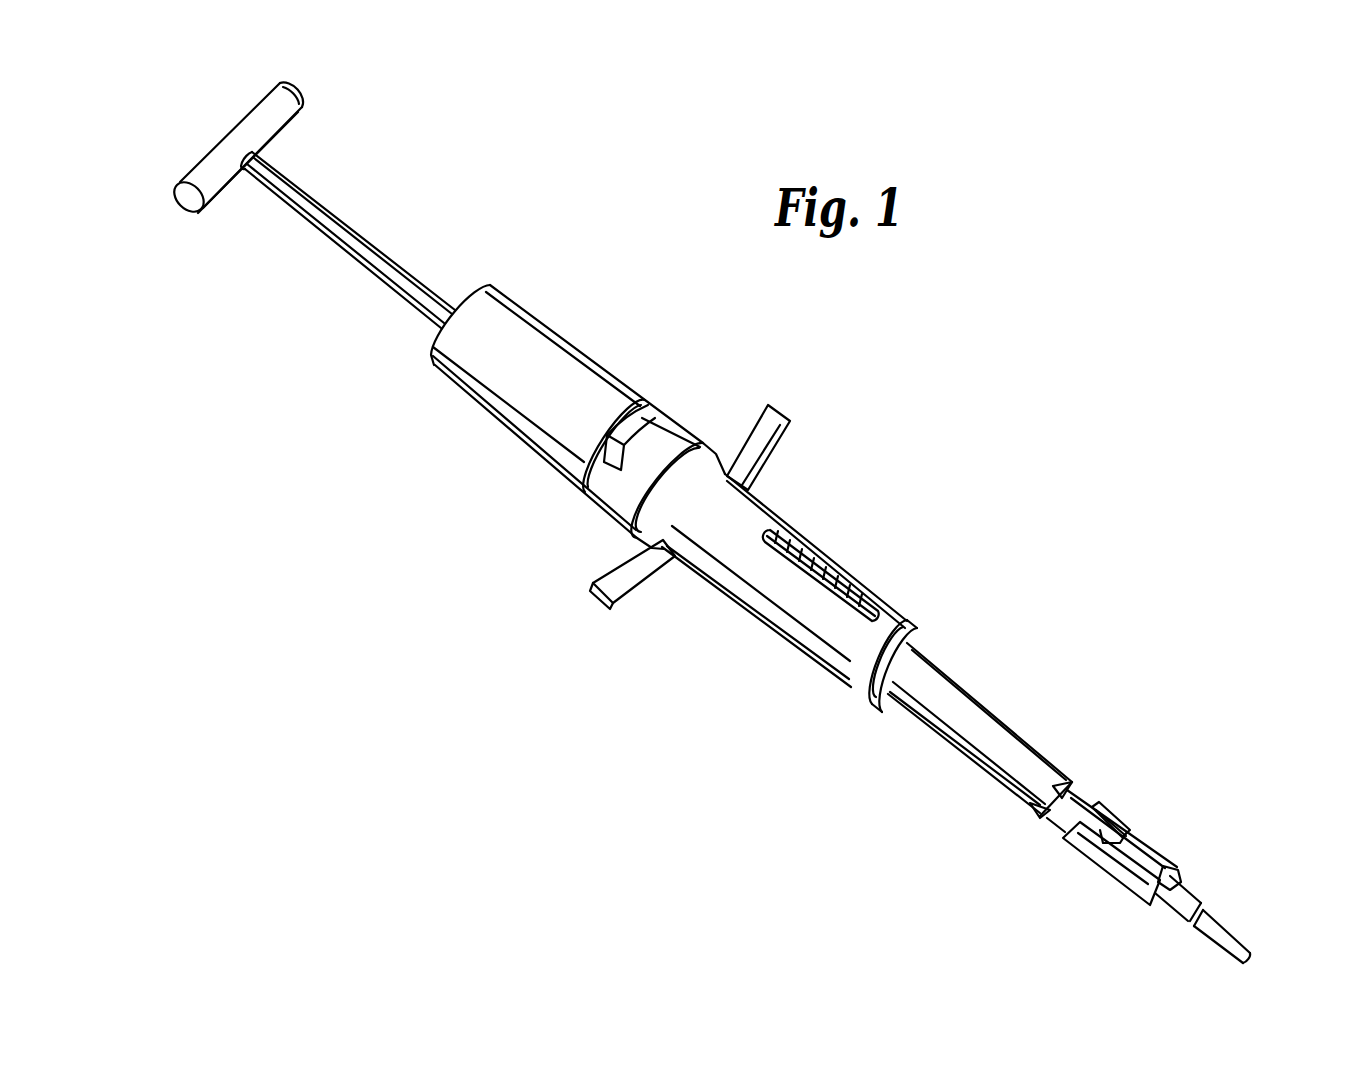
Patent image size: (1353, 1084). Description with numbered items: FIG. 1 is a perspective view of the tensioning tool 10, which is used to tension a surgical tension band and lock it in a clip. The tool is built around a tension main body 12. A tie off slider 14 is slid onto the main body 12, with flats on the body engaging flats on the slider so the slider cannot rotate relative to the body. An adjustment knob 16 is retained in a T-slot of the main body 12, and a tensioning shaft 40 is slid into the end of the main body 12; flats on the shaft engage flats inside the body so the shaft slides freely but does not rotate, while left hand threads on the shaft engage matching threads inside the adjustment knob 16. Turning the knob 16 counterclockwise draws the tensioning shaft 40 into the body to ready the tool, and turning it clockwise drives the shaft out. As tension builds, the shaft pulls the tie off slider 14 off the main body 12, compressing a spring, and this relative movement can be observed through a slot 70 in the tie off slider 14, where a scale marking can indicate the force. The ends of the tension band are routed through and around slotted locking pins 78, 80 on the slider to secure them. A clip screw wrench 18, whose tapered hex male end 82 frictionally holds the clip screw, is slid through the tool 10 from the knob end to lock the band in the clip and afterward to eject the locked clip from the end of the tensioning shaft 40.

The tensioning tool 10 is at (507, 520).
The tension main body 12 is at (681, 428).
The tie off slider 14 is at (767, 505).
The adjustment knob 16 is at (567, 340).
The clip screw wrench 18 is at (377, 247).
The tensioning shaft 40 is at (990, 715).
The slot 70 is at (827, 557).
The slotted locking pin 78 is at (783, 442).
The slotted locking pin 80 is at (635, 592).
The tapered hex male end 82 is at (1243, 942).